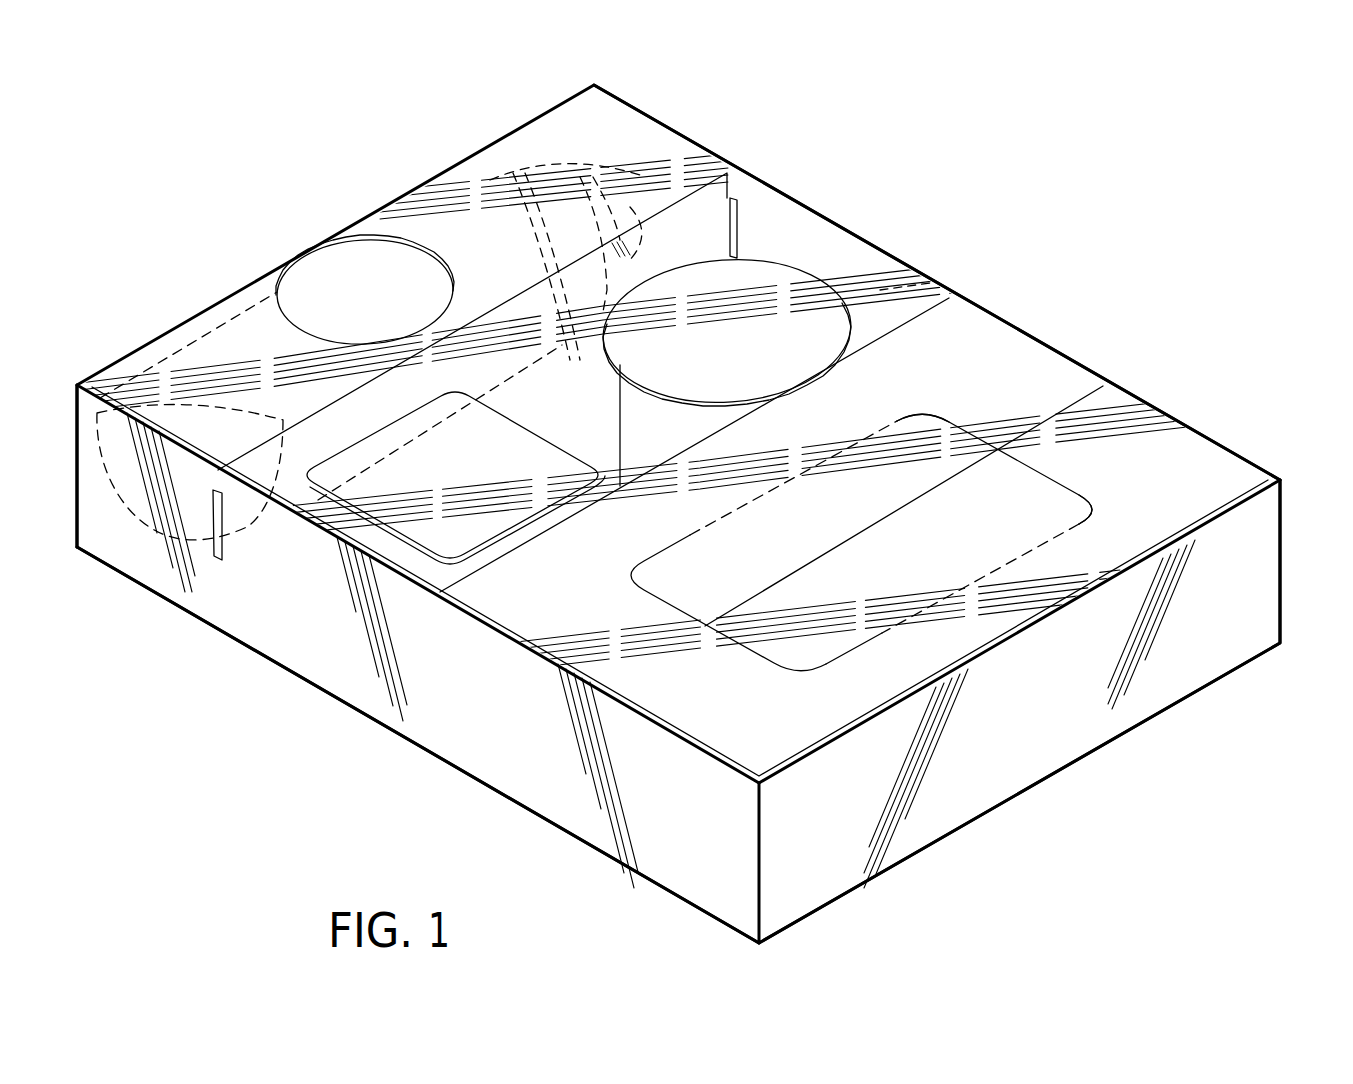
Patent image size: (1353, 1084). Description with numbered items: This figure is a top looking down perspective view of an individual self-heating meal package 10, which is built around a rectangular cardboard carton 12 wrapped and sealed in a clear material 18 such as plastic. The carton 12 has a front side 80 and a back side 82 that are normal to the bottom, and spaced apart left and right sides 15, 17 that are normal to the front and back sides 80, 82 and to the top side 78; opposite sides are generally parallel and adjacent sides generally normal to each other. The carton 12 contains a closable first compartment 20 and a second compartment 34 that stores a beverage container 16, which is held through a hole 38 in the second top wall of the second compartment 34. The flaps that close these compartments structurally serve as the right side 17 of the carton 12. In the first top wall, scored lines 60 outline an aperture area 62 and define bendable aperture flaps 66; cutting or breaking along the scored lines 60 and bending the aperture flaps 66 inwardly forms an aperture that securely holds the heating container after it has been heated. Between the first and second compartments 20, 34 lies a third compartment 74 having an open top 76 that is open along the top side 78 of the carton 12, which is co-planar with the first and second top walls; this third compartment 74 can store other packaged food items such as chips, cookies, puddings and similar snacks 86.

The self-heating meal package 10 is at (194, 776).
The carton 12 is at (720, 890).
The left side 15 is at (85, 380).
The beverage container 16 is at (316, 283).
The right side 17 is at (1256, 640).
The clear material 18 is at (934, 294).
The first compartment 20 is at (1197, 487).
The second compartment 34 is at (535, 157).
The hole 38 is at (360, 240).
The scored lines 60 is at (678, 533).
The aperture area 62 is at (870, 485).
The aperture flaps 66 is at (945, 418).
The third compartment 74 is at (287, 460).
The open top 76 is at (806, 228).
The top side 78 is at (736, 175).
The front side 80 is at (285, 640).
The back side 82 is at (894, 278).
The snacks 86 is at (738, 266).